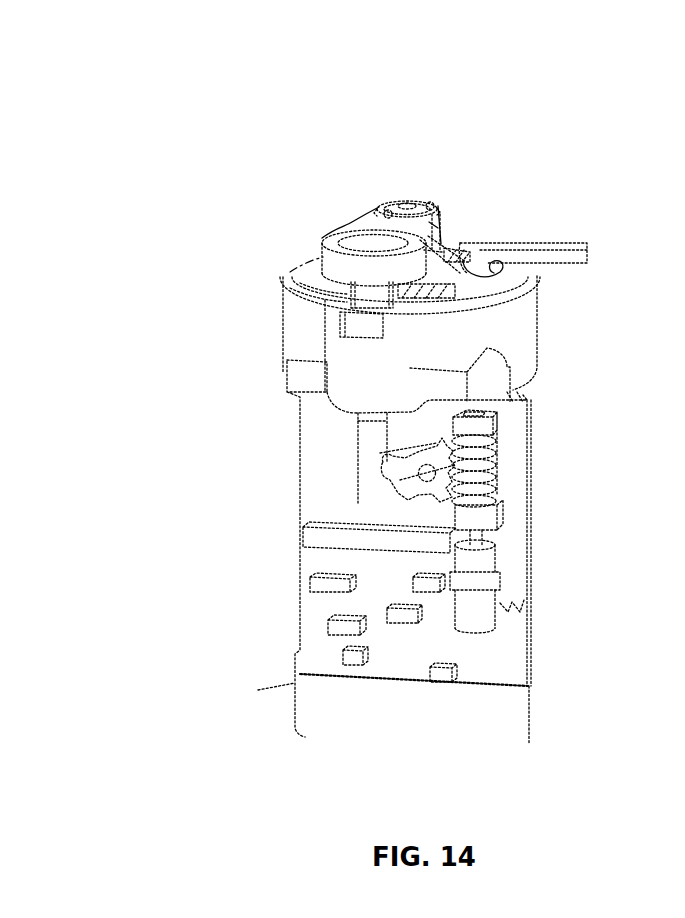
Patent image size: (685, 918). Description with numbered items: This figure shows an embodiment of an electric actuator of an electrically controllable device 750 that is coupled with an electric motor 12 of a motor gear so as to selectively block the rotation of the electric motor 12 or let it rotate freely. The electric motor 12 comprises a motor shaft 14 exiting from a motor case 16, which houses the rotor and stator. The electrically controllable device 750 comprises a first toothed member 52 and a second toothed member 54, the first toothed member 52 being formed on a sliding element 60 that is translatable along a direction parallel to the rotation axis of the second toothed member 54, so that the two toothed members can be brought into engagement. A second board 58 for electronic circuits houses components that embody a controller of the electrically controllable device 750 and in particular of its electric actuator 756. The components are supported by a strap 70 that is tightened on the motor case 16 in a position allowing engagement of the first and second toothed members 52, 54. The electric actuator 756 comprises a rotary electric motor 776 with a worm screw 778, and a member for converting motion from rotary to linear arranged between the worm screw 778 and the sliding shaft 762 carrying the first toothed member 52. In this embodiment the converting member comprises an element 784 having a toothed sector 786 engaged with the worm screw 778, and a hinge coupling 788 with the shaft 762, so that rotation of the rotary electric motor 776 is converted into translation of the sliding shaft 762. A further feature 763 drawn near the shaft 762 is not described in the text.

The electric motor 12 is at (190, 490).
The motor shaft 14 is at (410, 203).
The motor case 16 is at (513, 388).
The first toothed member 52 is at (378, 217).
The second toothed member 54 is at (432, 200).
The second board for electronic circuits 58 is at (320, 610).
The sliding element 60 is at (328, 260).
The strap 70 is at (528, 343).
The electrically controllable device 750 is at (404, 125).
The electric actuator 756 is at (511, 538).
The sliding shaft 762 is at (370, 293).
The block 763 is at (367, 287).
The rotary electric motor 776 is at (487, 603).
The worm screw 778 is at (487, 468).
The element 784 is at (445, 475).
The toothed sector 786 is at (457, 477).
The hinge coupling 788 is at (381, 470).